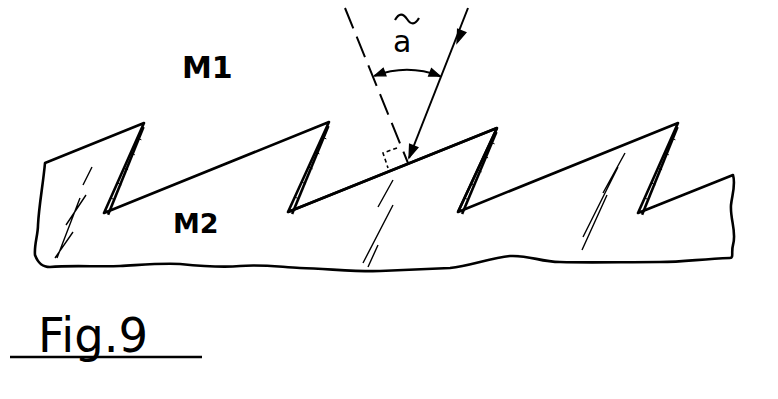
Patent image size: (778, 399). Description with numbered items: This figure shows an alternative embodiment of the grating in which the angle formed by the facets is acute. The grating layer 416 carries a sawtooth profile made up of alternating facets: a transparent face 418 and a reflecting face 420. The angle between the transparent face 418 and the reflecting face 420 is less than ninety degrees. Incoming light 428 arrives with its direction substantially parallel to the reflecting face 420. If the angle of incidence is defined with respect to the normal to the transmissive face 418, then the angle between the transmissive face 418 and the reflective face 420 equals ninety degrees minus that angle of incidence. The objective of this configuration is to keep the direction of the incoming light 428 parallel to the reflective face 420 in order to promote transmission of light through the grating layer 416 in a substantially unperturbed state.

The grating layer 416 is at (567, 237).
The transparent face 418 is at (448, 147).
The reflecting face 420 is at (487, 162).
The incoming light 428 is at (470, 13).